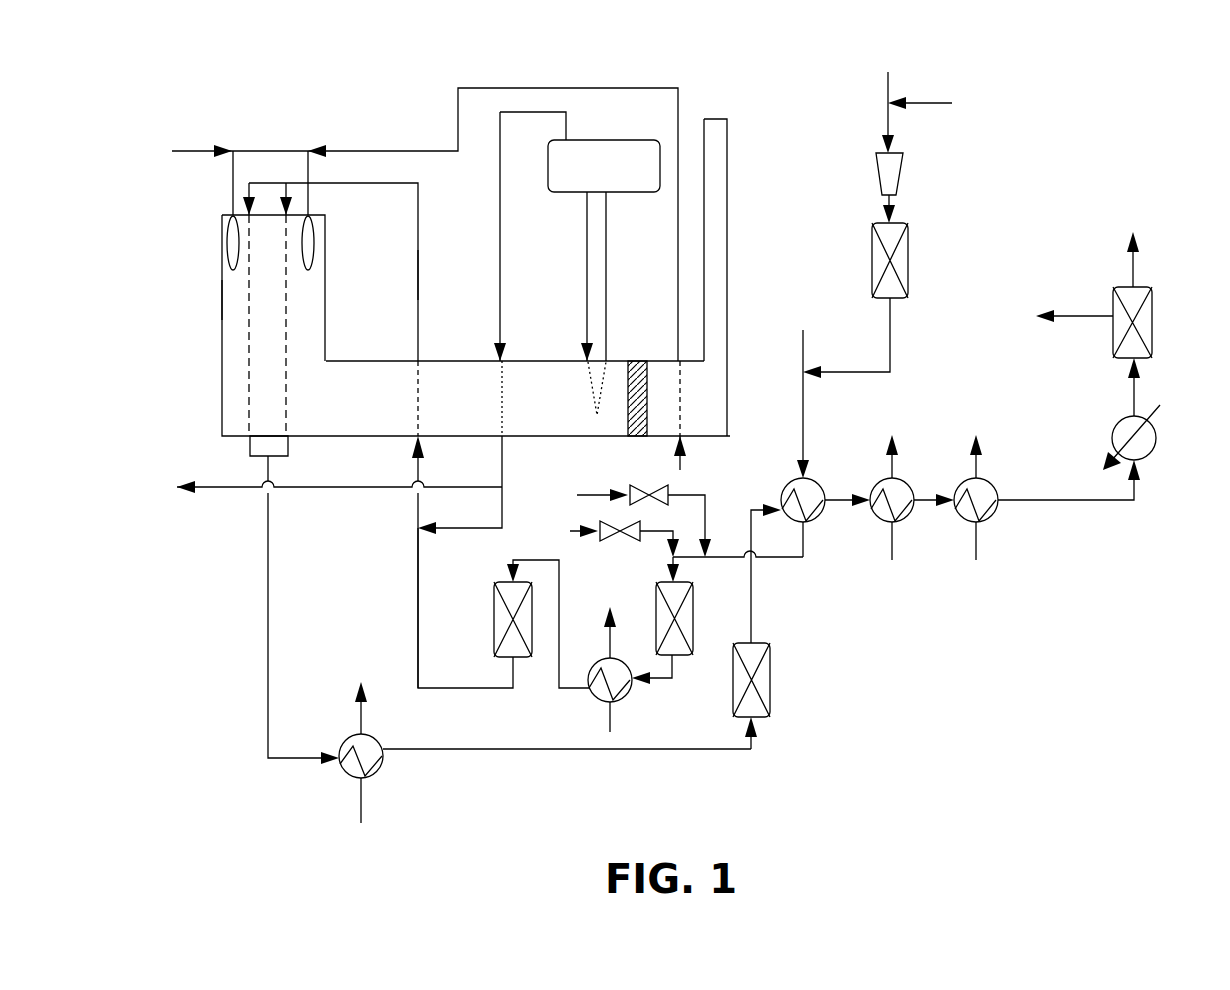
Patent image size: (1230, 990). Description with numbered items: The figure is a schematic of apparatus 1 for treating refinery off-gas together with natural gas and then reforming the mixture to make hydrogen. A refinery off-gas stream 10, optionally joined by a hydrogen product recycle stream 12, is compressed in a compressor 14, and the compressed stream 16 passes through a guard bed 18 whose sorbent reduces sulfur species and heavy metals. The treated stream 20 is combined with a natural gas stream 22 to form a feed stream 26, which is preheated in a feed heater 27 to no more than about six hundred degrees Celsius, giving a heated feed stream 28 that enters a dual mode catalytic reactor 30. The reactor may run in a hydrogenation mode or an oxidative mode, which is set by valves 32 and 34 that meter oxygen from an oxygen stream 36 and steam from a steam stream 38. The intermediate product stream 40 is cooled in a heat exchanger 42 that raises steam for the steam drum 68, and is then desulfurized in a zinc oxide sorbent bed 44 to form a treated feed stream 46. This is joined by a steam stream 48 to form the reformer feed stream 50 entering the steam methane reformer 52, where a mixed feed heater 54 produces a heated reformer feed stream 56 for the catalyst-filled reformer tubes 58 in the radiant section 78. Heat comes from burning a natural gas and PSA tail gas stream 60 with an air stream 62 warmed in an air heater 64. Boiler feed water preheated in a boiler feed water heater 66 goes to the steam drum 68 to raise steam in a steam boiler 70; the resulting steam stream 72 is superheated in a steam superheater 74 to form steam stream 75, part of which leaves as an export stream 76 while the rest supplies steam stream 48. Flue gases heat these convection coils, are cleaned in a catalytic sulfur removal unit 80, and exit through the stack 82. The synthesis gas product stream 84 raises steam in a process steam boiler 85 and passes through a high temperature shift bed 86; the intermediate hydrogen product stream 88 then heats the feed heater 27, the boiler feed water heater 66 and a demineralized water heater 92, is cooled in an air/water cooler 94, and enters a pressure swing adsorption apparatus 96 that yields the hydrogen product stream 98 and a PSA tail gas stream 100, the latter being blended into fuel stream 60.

The apparatus 1 is at (205, 615).
The refinery off-gas stream 10 is at (888, 82).
The hydrogen product recycle stream 12 is at (927, 105).
The compressor 14 is at (890, 177).
The compressed stream 16 is at (885, 200).
The guard bed 18 is at (902, 297).
The treated stream 20 is at (892, 360).
The natural gas stream 22 is at (803, 352).
The feed stream 26 is at (803, 418).
The feed heater 27 is at (812, 490).
The heated feed stream 28 is at (760, 558).
The dual mode catalytic reactor 30 is at (688, 612).
The valve 32 is at (635, 487).
The valve 34 is at (608, 525).
The oxygen stream 36 is at (707, 510).
The steam stream 38 is at (662, 532).
The intermediate product stream 40 is at (677, 663).
The heat exchanger 42 is at (622, 700).
The zinc oxide sorbent bed 44 is at (505, 593).
The treated feed stream 46 is at (450, 690).
The steam stream 48 is at (440, 528).
The reformer feed stream 50 is at (417, 468).
The steam methane reformer 52 is at (198, 410).
The mixed feed heater 54 is at (420, 373).
The heated reformer feed stream 56 is at (424, 277).
The reformer tubes 58 is at (288, 355).
The natural gas and PSA tail gas stream 60 is at (197, 150).
The air stream 62 is at (355, 151).
The air heater 64 is at (680, 370).
The boiler feed water heater 66 is at (902, 488).
The steam drum 68 is at (562, 185).
The steam boiler 70 is at (607, 368).
The steam stream 72 is at (503, 290).
The steam superheater 74 is at (502, 388).
The steam stream 75 is at (503, 460).
The stream 76 is at (210, 490).
The radiant section 78 is at (230, 295).
The catalytic sulfur removal unit 80 is at (636, 434).
The stack 82 is at (722, 222).
The synthesis gas product stream 84 is at (268, 603).
The process steam boiler 85 is at (373, 773).
The high temperature shift bed 86 is at (762, 708).
The intermediate hydrogen product stream 88 is at (755, 628).
The demineralized water heater 92 is at (967, 520).
The air/water cooler 94 is at (1143, 448).
The pressure swing adsorption apparatus 96 is at (1140, 350).
The hydrogen product stream 98 is at (1133, 270).
The PSA tail gas stream 100 is at (1075, 317).